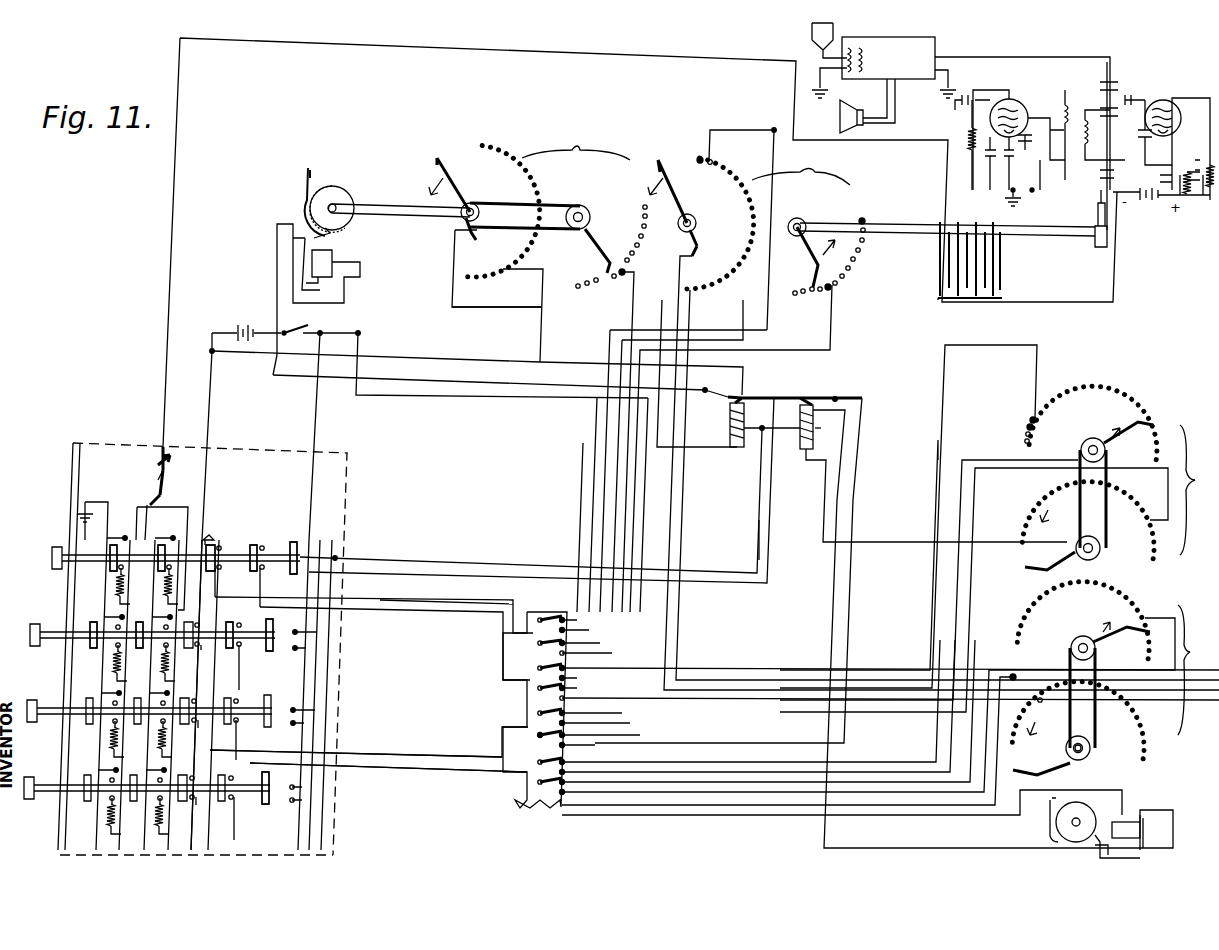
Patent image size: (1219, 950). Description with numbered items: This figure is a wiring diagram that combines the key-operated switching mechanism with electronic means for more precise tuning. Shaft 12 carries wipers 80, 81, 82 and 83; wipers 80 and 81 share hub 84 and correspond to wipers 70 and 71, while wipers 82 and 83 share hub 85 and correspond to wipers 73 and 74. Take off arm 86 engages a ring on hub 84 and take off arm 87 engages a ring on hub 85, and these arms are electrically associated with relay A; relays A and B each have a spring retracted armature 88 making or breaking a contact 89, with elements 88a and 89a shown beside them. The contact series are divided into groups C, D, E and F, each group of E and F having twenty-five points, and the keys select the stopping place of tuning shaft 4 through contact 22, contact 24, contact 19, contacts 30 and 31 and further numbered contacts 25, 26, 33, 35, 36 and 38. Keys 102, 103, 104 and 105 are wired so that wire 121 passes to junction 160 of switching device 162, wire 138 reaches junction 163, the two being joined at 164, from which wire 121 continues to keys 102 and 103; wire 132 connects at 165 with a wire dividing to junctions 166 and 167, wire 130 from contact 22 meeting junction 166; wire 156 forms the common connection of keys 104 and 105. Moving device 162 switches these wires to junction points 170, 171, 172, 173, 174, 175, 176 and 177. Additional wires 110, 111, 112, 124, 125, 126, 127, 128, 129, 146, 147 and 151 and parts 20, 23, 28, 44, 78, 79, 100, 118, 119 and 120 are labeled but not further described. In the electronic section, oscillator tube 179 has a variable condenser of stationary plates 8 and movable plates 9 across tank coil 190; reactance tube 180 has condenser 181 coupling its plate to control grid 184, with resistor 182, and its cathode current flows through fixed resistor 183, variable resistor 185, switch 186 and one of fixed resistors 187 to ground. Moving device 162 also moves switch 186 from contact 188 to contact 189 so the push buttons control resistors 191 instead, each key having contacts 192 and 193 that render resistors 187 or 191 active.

The tuning shaft 4 is at (910, 220).
The stationary plates 8 is at (938, 290).
The movable plates 9 is at (1002, 268).
The shaft 12 is at (385, 210).
The contact 19 is at (1040, 698).
The motor 20 is at (345, 185).
The contact 22 is at (1030, 425).
The pivot 23 is at (1092, 749).
The contact 24 is at (718, 160).
The contact 25 is at (698, 162).
The contacts 26 is at (578, 289).
The relay 28 is at (1125, 815).
The contact 30 is at (835, 290).
The contact 31 is at (628, 276).
The contact 33 is at (630, 263).
The contact 35 is at (866, 248).
The contact 36 is at (642, 236).
The contact 38 is at (646, 218).
The relay 44 is at (332, 262).
The wiper 70 is at (1045, 767).
The wiper 71 is at (1122, 640).
The wiper 73 is at (1060, 555).
The wiper 74 is at (1130, 440).
The arm 78 is at (1072, 748).
The arm 79 is at (1078, 545).
The wiper 80 is at (455, 185).
The wiper 81 is at (586, 252).
The wiper 82 is at (670, 196).
The wiper 83 is at (812, 266).
The hub 84 is at (470, 205).
The hub 85 is at (690, 212).
The take off arm 86 is at (477, 237).
The take off arm 87 is at (693, 255).
The armature 88 is at (745, 405).
The contact 88a is at (790, 396).
The contact 89 is at (745, 390).
The switch blade 89a is at (810, 397).
The battery 100 is at (250, 315).
The key 102 is at (52, 545).
The key 103 is at (32, 622).
The key 104 is at (28, 698).
The key 105 is at (26, 776).
The wire 110 is at (210, 352).
The wire 111 is at (412, 362).
The wire 112 is at (497, 398).
The contact plate 118 is at (212, 540).
The contact plate 119 is at (252, 540).
The contact plate 120 is at (292, 545).
The wire 121 is at (540, 292).
The wire 124 is at (211, 408).
The wire 125 is at (470, 315).
The wire 126 is at (760, 440).
The wire 127 is at (468, 566).
The wire 128 is at (337, 556).
The wire 129 is at (318, 417).
The wire 130 is at (1038, 362).
The wire 132 is at (405, 608).
The wire 138 is at (738, 128).
The wire 146 is at (808, 450).
The wire 147 is at (462, 590).
The wire 151 is at (400, 758).
The wire 156 is at (408, 775).
The junction 160 is at (560, 612).
The switching device 162 is at (540, 713).
The junction 163 is at (540, 643).
The junction 164 is at (533, 633).
The junction 165 is at (530, 680).
The junction 166 is at (540, 668).
The junction 167 is at (540, 735).
The junction point 170 is at (575, 630).
The junction point 171 is at (575, 653).
The junction point 172 is at (632, 686).
The junction point 173 is at (630, 713).
The junction point 174 is at (628, 743).
The junction point 175 is at (575, 760).
The junction point 176 is at (592, 782).
The junction point 177 is at (562, 805).
The oscillator tube 179 is at (1158, 96).
The reactance tube 180 is at (1020, 100).
The condenser 181 is at (988, 95).
The resistor 182 is at (972, 128).
The fixed resistor 183 is at (990, 152).
The control grid 184 is at (1062, 86).
The variable resistor 185 is at (158, 466).
The switch 186 is at (168, 500).
The fixed resistor 187 is at (102, 592).
The contact 188 is at (147, 505).
The contact 189 is at (168, 505).
The tank coil 190 is at (1088, 110).
The fixed resistor 191 is at (168, 596).
The contact 192 is at (110, 548).
The contact 193 is at (160, 540).